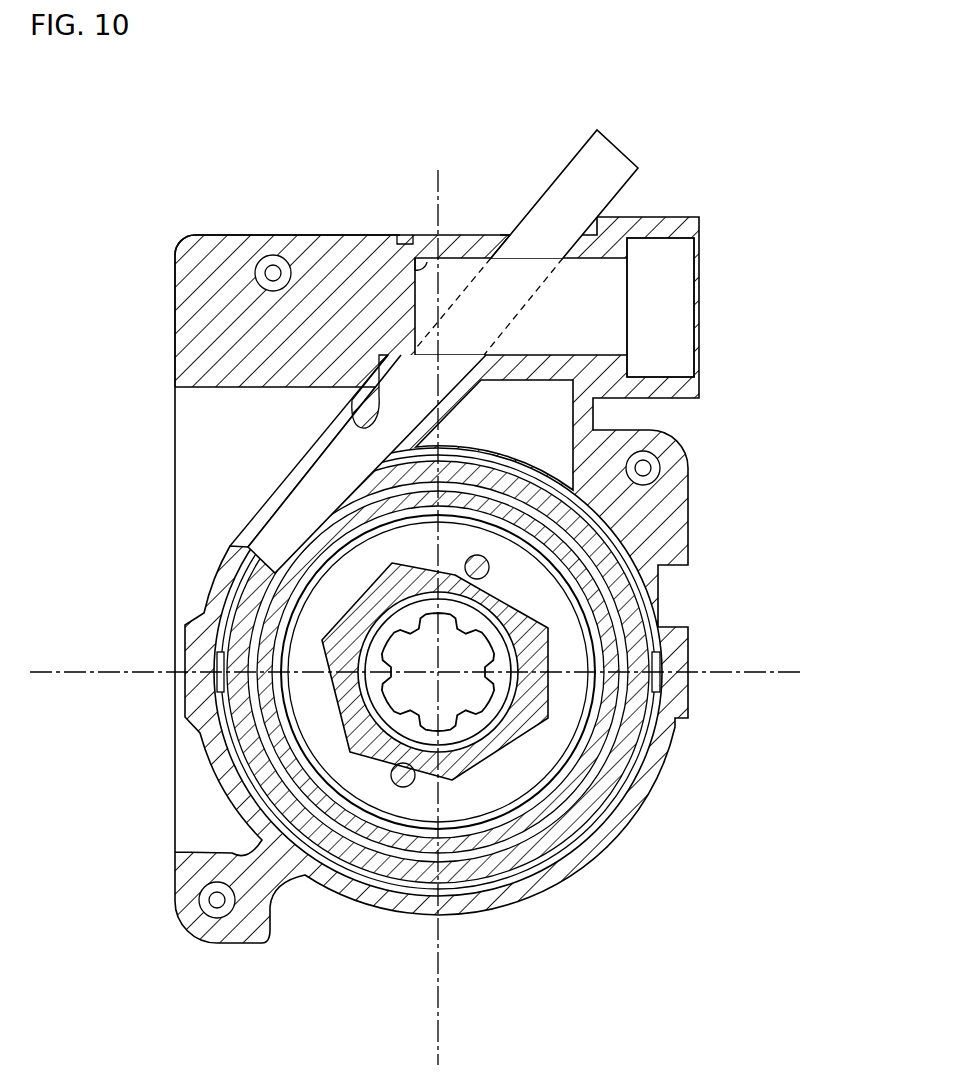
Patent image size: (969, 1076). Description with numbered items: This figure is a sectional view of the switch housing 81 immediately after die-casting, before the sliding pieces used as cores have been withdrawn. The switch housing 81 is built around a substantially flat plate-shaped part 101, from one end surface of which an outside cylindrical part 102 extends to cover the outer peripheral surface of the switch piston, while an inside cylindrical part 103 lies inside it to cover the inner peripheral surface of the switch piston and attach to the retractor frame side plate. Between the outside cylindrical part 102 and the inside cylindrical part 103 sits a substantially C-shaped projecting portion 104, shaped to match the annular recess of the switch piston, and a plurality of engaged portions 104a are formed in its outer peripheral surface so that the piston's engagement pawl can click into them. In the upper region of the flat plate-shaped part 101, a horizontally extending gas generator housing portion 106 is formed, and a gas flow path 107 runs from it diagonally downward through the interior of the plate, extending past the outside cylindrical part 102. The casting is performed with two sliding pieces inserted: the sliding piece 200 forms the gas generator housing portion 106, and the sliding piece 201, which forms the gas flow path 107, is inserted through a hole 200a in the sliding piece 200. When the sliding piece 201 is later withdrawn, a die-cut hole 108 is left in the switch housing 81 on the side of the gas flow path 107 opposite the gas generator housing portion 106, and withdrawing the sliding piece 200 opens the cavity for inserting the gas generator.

The switch housing 81 is at (180, 237).
The substantially flat plate-shaped part 101 is at (680, 530).
The outside cylindrical part 102 is at (650, 766).
The inside cylindrical part 103 is at (565, 800).
The substantially C-shaped projecting portion 104 is at (612, 787).
The engaged portions 104a is at (660, 680).
The gas generator housing portion 106 is at (413, 255).
The gas flow path 107 is at (378, 400).
The die-cut hole 108 is at (512, 238).
The sliding piece 200 is at (680, 298).
The hole 200a is at (450, 305).
The sliding piece 201 is at (613, 180).